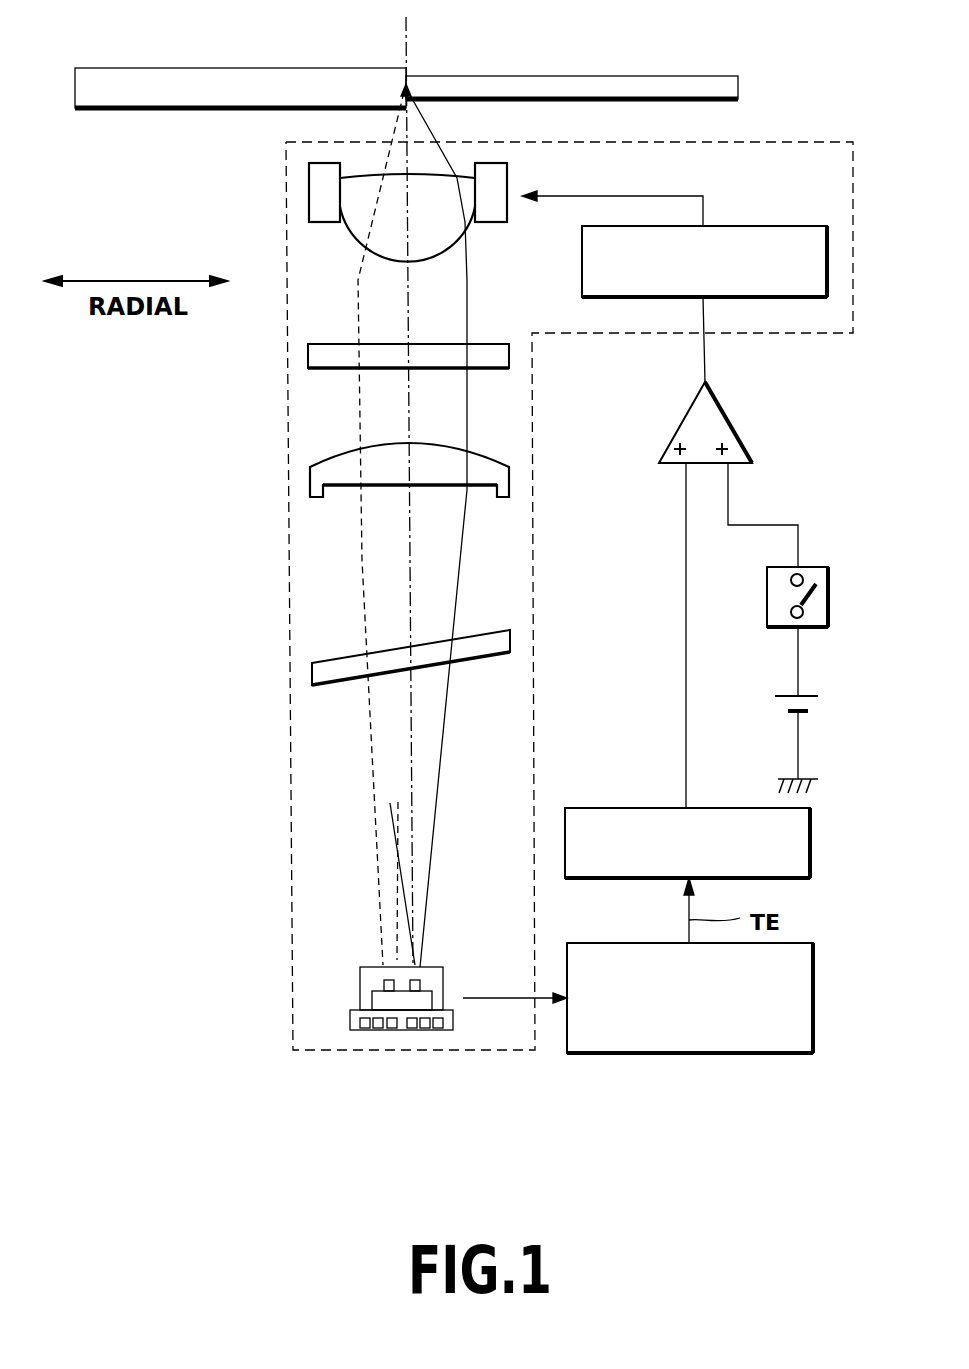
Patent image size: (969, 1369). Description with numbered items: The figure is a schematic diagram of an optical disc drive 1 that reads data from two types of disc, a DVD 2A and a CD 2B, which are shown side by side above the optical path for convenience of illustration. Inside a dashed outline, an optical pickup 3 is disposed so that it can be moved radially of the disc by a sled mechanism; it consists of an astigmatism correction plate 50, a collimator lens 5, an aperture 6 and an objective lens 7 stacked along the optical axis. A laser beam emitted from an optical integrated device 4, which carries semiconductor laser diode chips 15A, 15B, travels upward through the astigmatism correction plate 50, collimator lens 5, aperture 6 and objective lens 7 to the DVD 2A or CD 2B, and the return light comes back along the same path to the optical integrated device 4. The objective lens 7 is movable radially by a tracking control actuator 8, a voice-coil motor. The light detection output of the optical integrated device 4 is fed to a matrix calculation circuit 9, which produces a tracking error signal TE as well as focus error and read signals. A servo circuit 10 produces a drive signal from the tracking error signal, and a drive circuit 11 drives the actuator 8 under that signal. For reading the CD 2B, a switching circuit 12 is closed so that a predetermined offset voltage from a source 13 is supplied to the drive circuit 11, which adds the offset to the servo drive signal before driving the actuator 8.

The optical disc drive 1 is at (203, 796).
The DVD 2A is at (545, 76).
The CD 2B is at (212, 80).
The optical pickup 3 is at (290, 556).
The optical integrated device 4 is at (350, 1027).
The collimator lens 5 is at (309, 473).
The aperture 6 is at (309, 357).
The objective lens 7 is at (309, 193).
The tracking control actuator 8 is at (748, 226).
The matrix calculation circuit 9 is at (595, 943).
The servo circuit 10 is at (593, 808).
The drive circuit 11 is at (737, 428).
The switching circuit 12 is at (808, 567).
The offset voltage source 13 is at (805, 695).
The astigmatism correction plate 50 is at (312, 668).
The semiconductor laser diode chip 15A is at (417, 988).
The semiconductor laser diode chip 15B is at (390, 988).